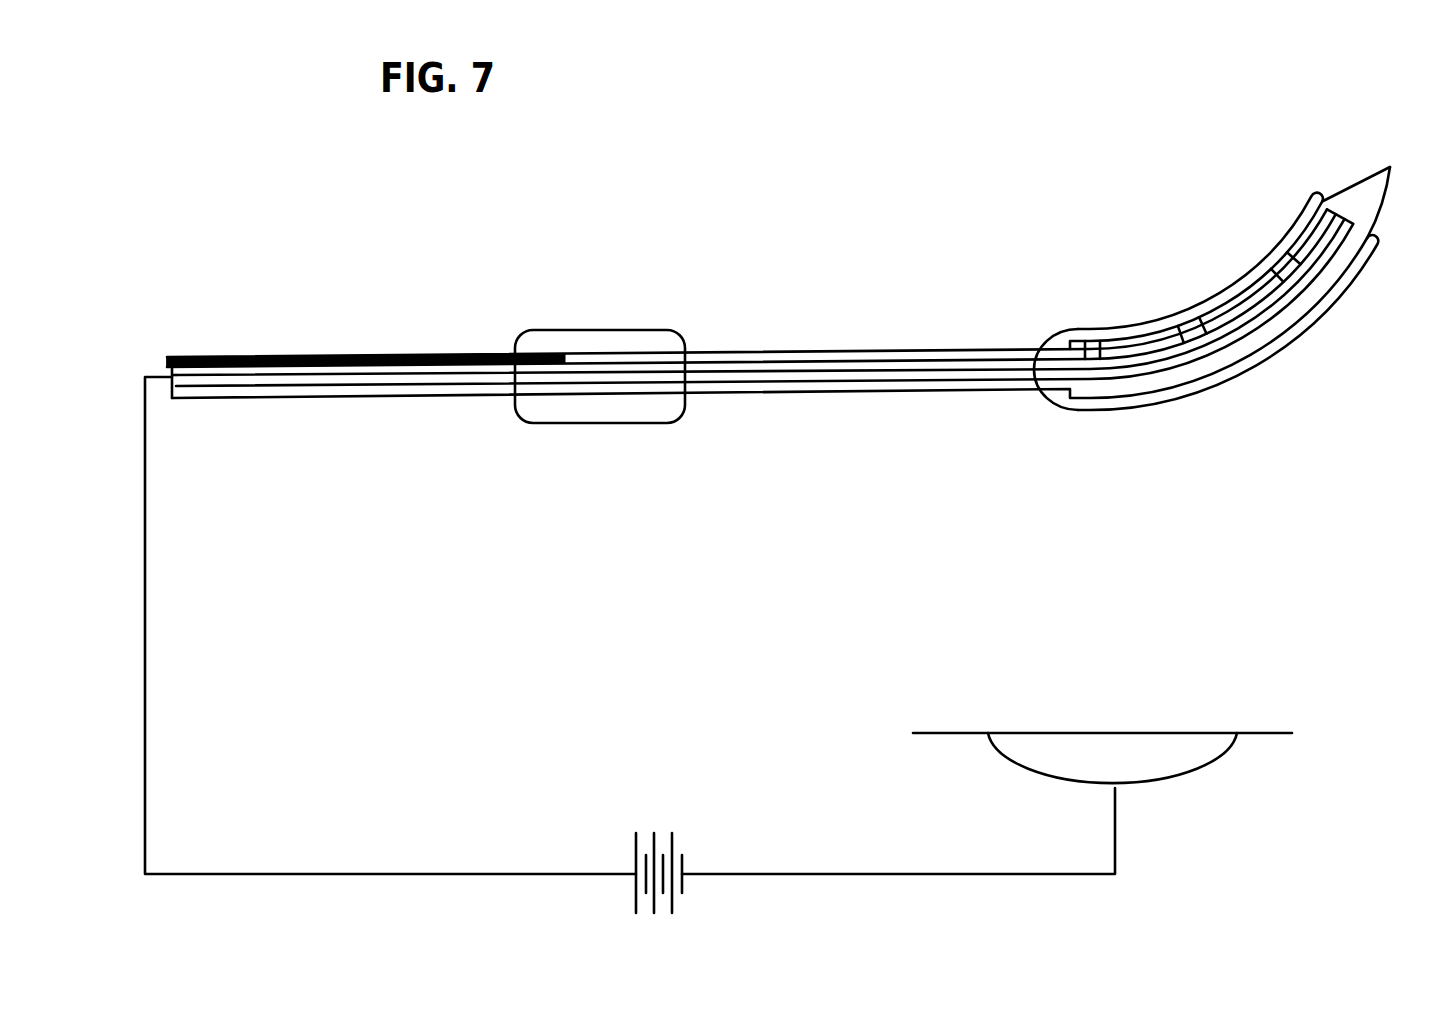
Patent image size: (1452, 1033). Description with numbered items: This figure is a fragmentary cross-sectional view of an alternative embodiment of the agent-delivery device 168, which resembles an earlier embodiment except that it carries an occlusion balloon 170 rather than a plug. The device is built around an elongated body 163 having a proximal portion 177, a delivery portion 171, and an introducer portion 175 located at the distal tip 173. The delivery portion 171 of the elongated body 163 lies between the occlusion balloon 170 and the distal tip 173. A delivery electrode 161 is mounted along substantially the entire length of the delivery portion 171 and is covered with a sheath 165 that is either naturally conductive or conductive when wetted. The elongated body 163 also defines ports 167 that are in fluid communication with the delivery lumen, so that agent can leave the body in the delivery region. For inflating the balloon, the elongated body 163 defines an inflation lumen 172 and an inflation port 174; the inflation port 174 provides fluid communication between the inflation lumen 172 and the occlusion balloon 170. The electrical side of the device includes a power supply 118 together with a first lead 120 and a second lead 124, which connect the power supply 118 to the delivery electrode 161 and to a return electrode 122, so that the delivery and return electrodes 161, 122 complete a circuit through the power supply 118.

The agent-delivery device 168 is at (789, 106).
The delivery portion 171 is at (1251, 361).
The sheath 165 is at (222, 381).
The elongated body 163 is at (364, 399).
The delivery electrode 161 is at (1176, 384).
The proximal portion 177 is at (337, 356).
The inflation port 174 is at (565, 357).
The inflation lumen 172 is at (212, 357).
The occlusion balloon 170 is at (628, 332).
The ports 167 is at (1272, 252).
The distal tip 173 is at (1392, 168).
The introducer portion 175 is at (1393, 184).
The first lead 120 is at (147, 616).
The power supply 118 is at (656, 845).
The second lead 124 is at (833, 874).
The return electrode 122 is at (1190, 770).